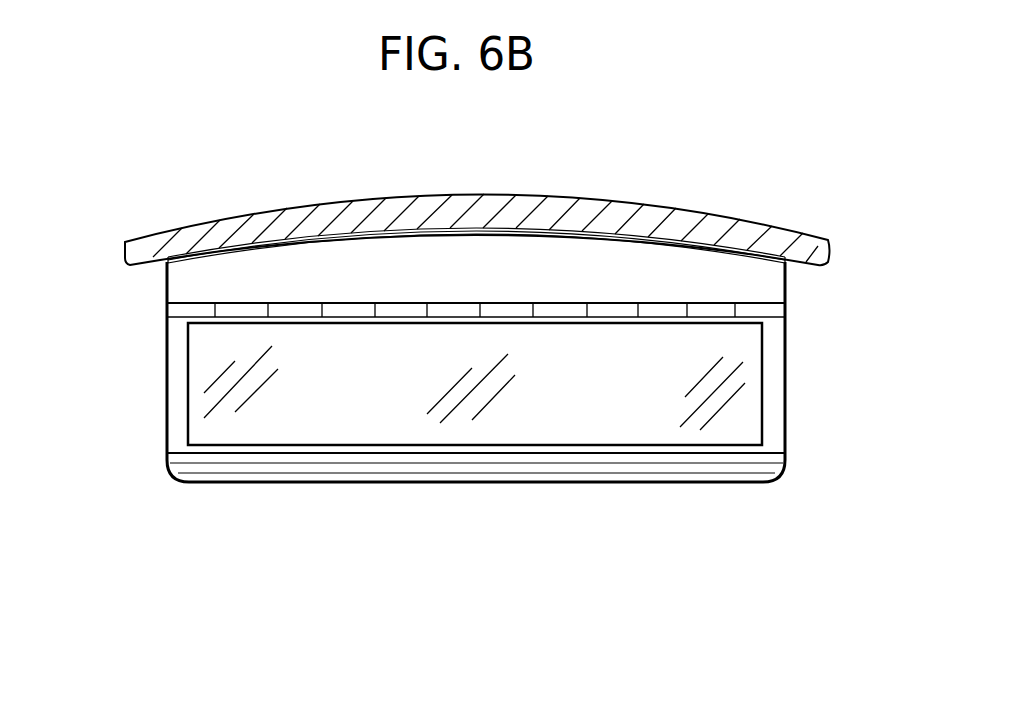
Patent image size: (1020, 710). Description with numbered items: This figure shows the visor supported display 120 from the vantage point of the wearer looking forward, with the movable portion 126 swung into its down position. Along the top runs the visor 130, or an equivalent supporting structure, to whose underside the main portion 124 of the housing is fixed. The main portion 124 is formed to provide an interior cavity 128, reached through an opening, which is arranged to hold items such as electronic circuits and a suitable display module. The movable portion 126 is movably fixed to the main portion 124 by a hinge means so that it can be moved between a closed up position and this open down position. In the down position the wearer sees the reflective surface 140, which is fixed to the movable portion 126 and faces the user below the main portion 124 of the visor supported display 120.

The visor supported display 120 is at (267, 527).
The main portion 124 is at (762, 288).
The movable portion 126 is at (773, 405).
The interior cavity 128 is at (253, 313).
The visor 130 is at (692, 226).
The reflective surface 140 is at (287, 425).